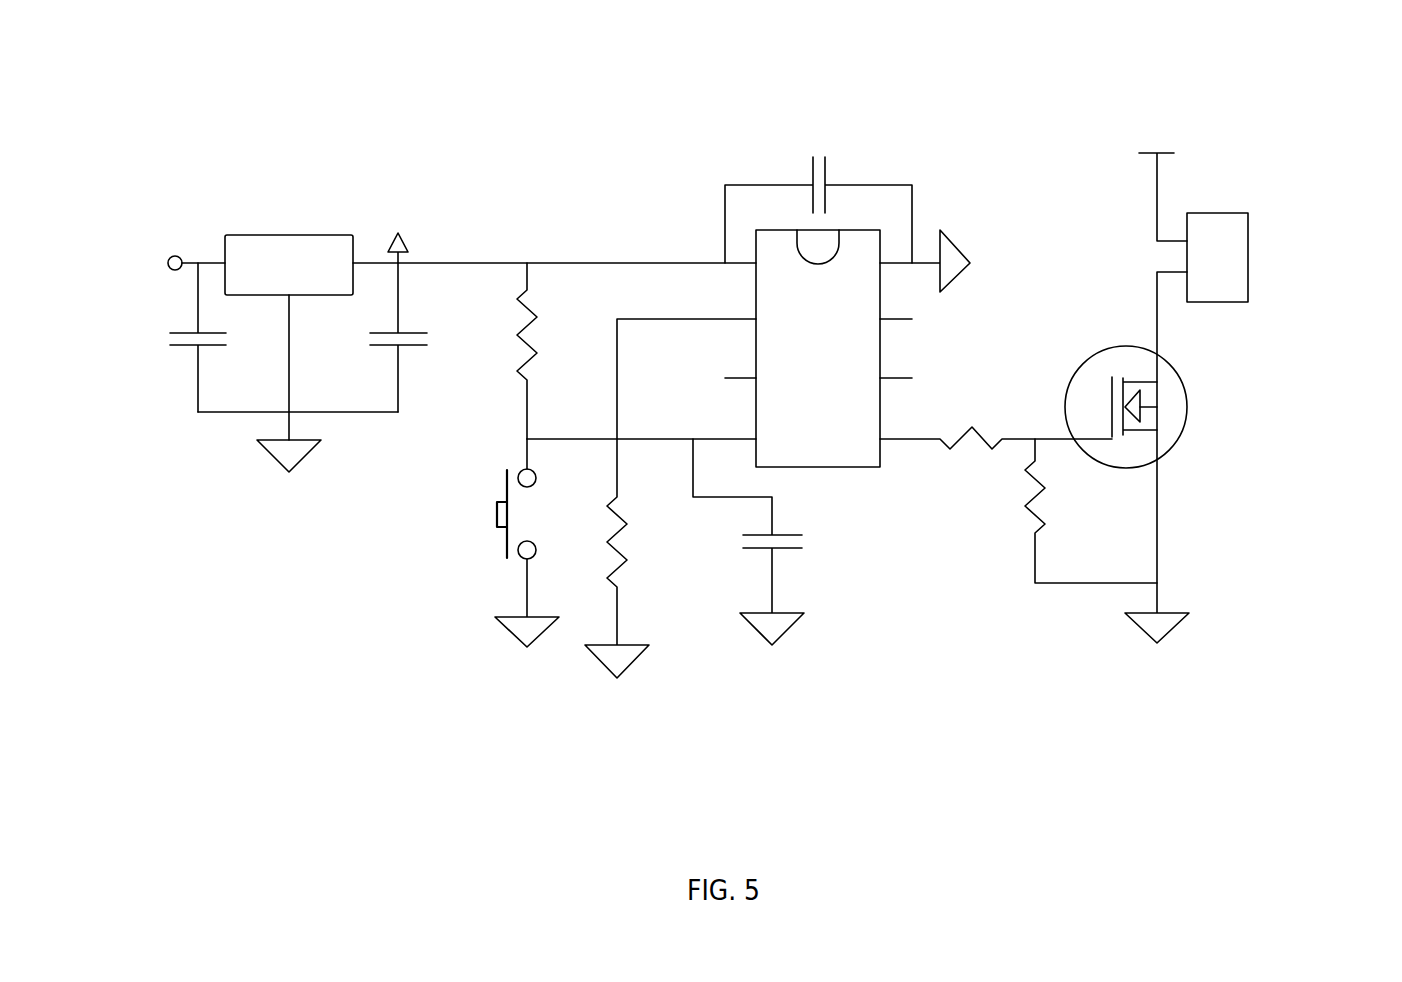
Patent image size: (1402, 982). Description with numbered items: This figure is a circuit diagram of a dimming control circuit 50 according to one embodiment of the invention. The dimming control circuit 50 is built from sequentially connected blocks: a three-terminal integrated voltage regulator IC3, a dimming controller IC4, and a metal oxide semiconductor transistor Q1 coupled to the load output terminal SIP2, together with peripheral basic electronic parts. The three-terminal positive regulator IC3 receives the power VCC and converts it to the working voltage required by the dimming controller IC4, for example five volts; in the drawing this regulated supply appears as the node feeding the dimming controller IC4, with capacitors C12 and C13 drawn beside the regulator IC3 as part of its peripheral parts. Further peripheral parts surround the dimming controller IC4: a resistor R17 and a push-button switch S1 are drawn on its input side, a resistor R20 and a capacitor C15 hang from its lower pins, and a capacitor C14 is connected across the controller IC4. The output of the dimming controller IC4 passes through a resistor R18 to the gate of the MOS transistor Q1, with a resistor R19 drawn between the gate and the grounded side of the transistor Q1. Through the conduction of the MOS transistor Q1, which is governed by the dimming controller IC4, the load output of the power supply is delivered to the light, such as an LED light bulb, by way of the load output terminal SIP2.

The dimming control circuit 50 is at (480, 88).
The three-terminal integrated voltage regulator IC3 is at (289, 311).
The capacitor C12 is at (225, 337).
The capacitor C13 is at (371, 337).
The resistor R17 is at (497, 351).
The push-button switch S1 is at (477, 543).
The resistor R20 is at (670, 498).
The capacitor C15 is at (773, 542).
The dimming controller IC4 is at (818, 329).
The capacitor C14 is at (818, 185).
The resistor R18 is at (996, 413).
The metal oxide semiconductor transistor Q1 is at (1153, 407).
The resistor R19 is at (1091, 511).
The load output terminal SIP2 is at (1279, 257).